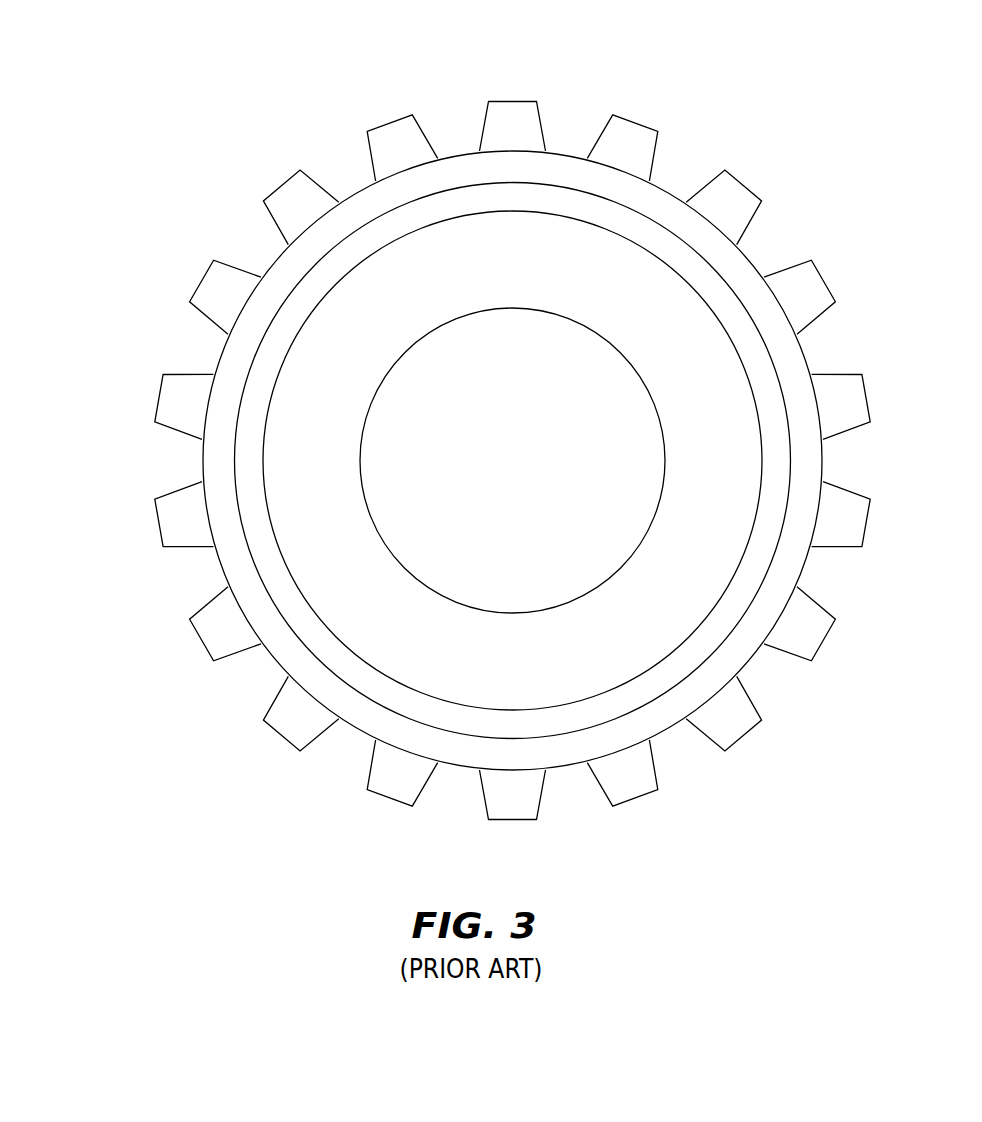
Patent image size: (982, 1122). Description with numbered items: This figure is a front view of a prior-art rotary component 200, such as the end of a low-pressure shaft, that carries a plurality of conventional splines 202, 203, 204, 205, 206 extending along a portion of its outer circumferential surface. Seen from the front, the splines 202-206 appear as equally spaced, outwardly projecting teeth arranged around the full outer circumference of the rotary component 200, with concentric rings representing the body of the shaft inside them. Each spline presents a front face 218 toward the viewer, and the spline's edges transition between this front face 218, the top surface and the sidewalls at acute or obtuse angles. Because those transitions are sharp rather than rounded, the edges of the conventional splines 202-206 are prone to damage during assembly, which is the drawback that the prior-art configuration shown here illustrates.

The rotary component 200 is at (808, 184).
The conventional spline 202 is at (514, 101).
The conventional spline 203 is at (386, 116).
The conventional spline 204 is at (281, 185).
The conventional spline 205 is at (201, 281).
The conventional spline 206 is at (154, 398).
The front face 218 is at (380, 164).